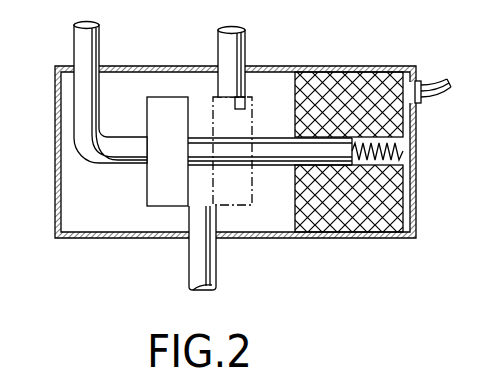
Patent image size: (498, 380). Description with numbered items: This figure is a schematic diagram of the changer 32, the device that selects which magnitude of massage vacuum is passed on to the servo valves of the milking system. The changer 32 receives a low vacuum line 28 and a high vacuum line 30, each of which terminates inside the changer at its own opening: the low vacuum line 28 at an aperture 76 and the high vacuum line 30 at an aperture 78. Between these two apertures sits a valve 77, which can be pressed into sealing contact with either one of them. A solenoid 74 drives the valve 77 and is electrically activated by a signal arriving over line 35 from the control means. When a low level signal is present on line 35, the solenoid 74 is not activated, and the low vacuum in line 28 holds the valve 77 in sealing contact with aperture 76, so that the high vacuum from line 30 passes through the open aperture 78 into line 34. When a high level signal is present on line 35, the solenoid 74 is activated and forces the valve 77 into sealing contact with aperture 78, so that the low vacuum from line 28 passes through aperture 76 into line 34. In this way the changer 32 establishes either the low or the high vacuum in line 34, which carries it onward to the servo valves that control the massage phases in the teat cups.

The low vacuum line 28 is at (106, 39).
The high vacuum line 30 is at (246, 47).
The changer 32 is at (305, 239).
The line 34 is at (189, 260).
The line 35 is at (436, 81).
The solenoid 74 is at (376, 72).
The aperture 76 is at (147, 147).
The valve 77 is at (150, 191).
The aperture 78 is at (233, 104).